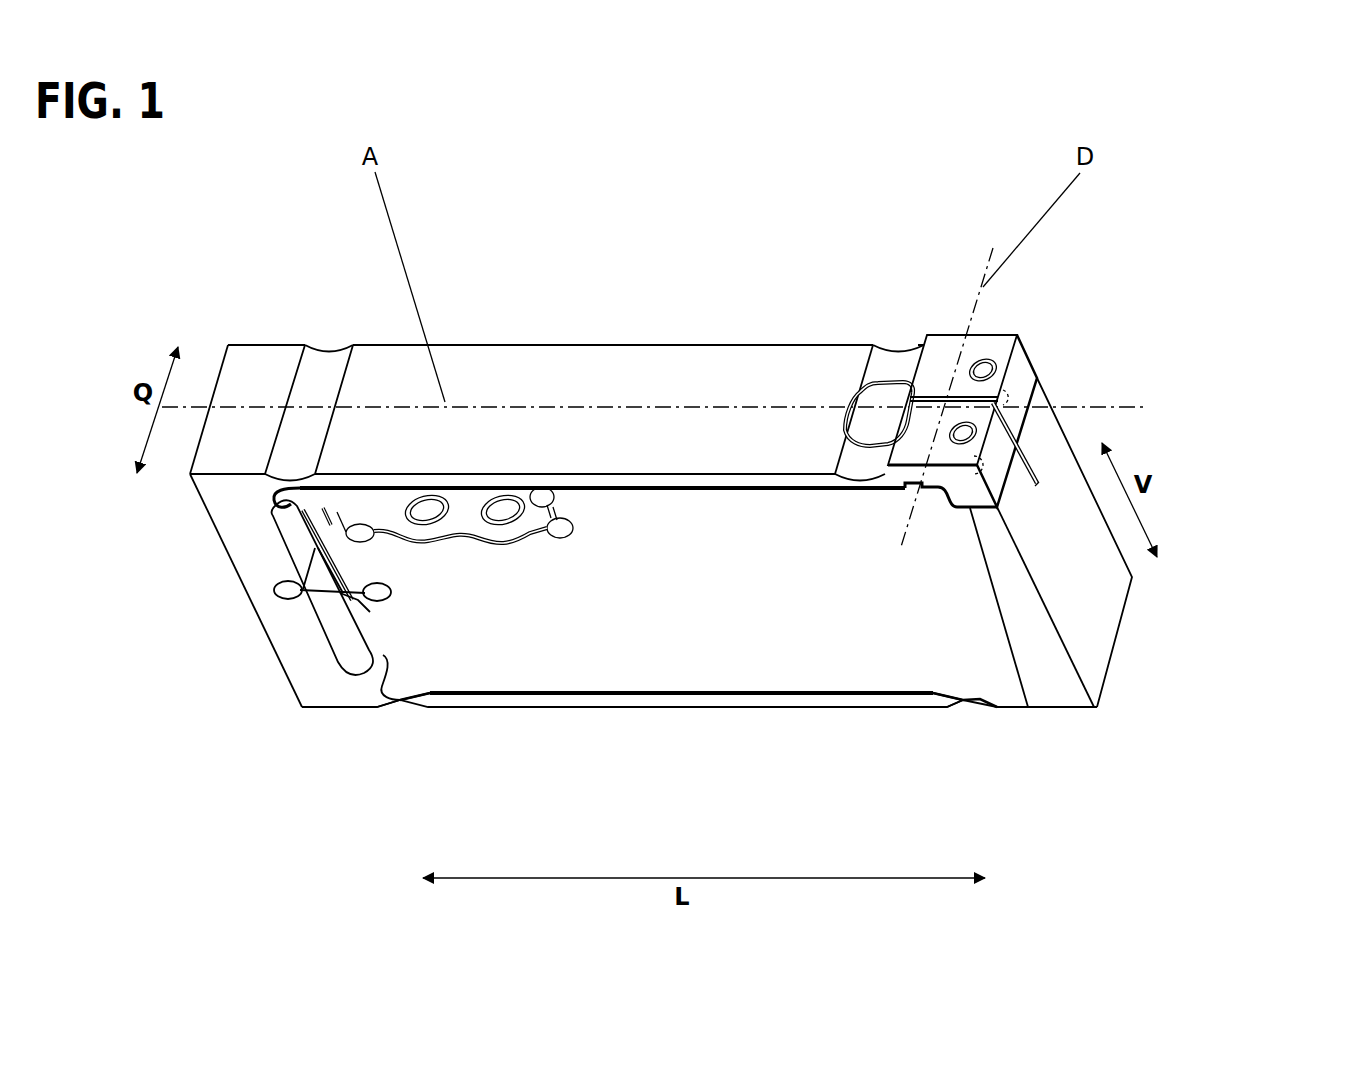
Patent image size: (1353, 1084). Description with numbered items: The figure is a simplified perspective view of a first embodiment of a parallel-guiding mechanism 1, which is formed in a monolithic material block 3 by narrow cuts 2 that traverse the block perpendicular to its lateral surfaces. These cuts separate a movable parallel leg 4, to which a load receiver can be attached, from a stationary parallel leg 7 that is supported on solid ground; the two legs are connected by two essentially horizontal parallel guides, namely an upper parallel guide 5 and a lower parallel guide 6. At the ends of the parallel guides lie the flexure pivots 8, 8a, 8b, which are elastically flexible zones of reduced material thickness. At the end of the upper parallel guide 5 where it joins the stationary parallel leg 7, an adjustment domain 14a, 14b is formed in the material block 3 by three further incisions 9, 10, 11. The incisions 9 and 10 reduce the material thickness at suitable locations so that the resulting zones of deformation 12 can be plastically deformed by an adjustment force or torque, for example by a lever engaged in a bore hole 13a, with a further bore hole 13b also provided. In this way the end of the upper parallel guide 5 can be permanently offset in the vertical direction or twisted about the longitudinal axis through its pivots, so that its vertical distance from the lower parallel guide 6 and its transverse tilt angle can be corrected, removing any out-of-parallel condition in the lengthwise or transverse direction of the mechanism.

The parallel-guiding mechanism 1 is at (190, 303).
The narrow cuts 2 is at (612, 488).
The monolithic material block 3 is at (695, 585).
The movable parallel leg 4 is at (293, 637).
The upper parallel guide 5 is at (702, 388).
The lower parallel guide 6 is at (748, 700).
The stationary parallel leg 7 is at (1065, 587).
The flexure pivot 8 is at (307, 395).
The flexure pivot 8a is at (866, 465).
The flexure pivot 8b is at (894, 362).
The further incision 9 is at (908, 485).
The further incision 10 is at (1027, 705).
The further incision 11 is at (927, 400).
The zone of deformation 12 is at (922, 473).
The bore hole 13a is at (965, 432).
The bore hole 13b is at (985, 370).
The adjustment domain 14a is at (998, 456).
The adjustment domain 14b is at (1020, 378).